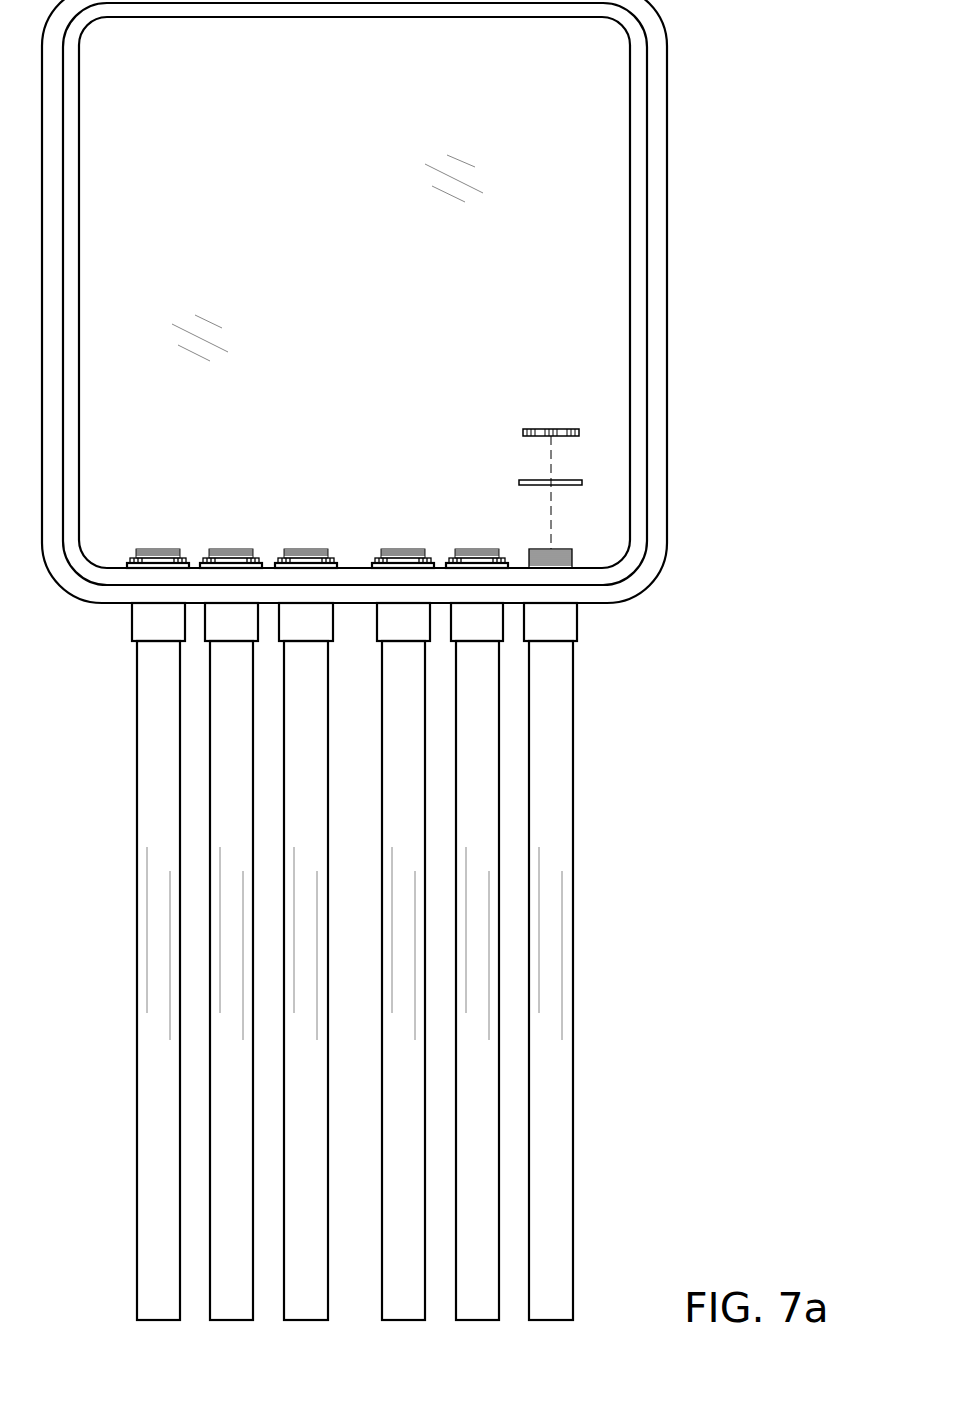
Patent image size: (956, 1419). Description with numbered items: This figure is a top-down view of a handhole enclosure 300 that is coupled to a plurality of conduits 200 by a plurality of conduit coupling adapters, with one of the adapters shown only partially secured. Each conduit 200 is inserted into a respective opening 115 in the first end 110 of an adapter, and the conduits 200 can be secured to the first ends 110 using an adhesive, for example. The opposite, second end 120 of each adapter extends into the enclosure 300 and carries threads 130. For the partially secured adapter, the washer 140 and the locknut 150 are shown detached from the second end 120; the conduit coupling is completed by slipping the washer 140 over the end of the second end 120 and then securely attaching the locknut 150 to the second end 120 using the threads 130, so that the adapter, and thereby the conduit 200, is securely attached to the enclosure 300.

The enclosure 300 is at (79, 197).
The locknut 150 is at (537, 428).
The washer 140 is at (527, 480).
The second end 120 is at (540, 549).
The threads 130 is at (572, 555).
The first end 110 is at (580, 623).
The opening 115 is at (557, 641).
The conduit 200 is at (572, 838).